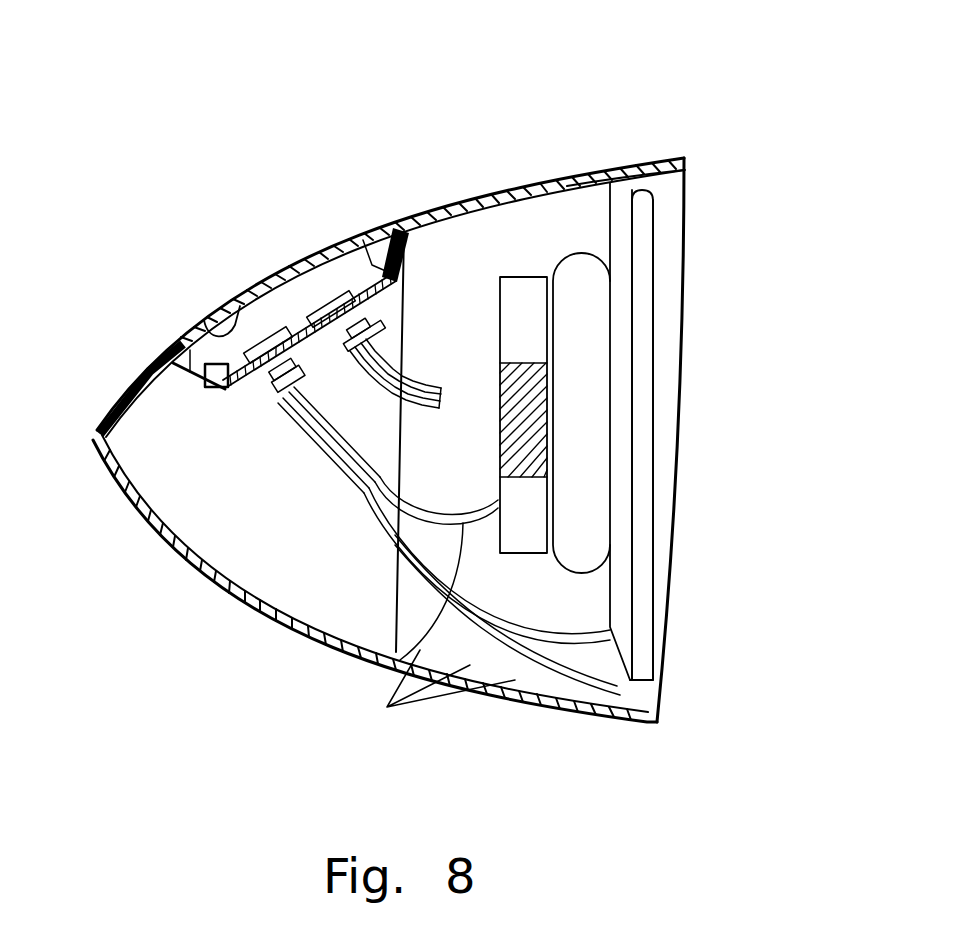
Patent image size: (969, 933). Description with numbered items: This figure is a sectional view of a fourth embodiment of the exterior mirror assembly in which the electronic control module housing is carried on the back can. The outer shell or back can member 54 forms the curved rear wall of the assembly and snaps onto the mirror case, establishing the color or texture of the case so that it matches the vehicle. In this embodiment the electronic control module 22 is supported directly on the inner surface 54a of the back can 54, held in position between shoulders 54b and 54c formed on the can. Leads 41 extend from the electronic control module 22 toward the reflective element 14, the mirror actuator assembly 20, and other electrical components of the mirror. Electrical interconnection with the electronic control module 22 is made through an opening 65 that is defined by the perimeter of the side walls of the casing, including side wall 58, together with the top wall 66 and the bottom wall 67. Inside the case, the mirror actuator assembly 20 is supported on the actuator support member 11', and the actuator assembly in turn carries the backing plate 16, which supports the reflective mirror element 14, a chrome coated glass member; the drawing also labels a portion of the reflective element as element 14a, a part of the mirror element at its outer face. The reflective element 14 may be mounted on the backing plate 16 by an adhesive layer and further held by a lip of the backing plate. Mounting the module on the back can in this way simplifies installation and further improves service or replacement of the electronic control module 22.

The back can member 54 is at (460, 195).
The inner surface of back can 54a is at (207, 320).
The shoulder 54b is at (197, 358).
The shoulder 54c is at (380, 243).
The side wall 58 is at (512, 240).
The opening 65 is at (397, 205).
The top wall 66 is at (567, 173).
The bottom wall 67 is at (540, 713).
The electronic control module 22 is at (287, 312).
The leads 41 is at (400, 688).
The actuator support member 11' is at (662, 375).
The mirror actuator assembly 20 is at (593, 343).
The backing plate 16 is at (623, 423).
The reflective mirror element 14 is at (643, 387).
The lens rim 14a is at (657, 550).